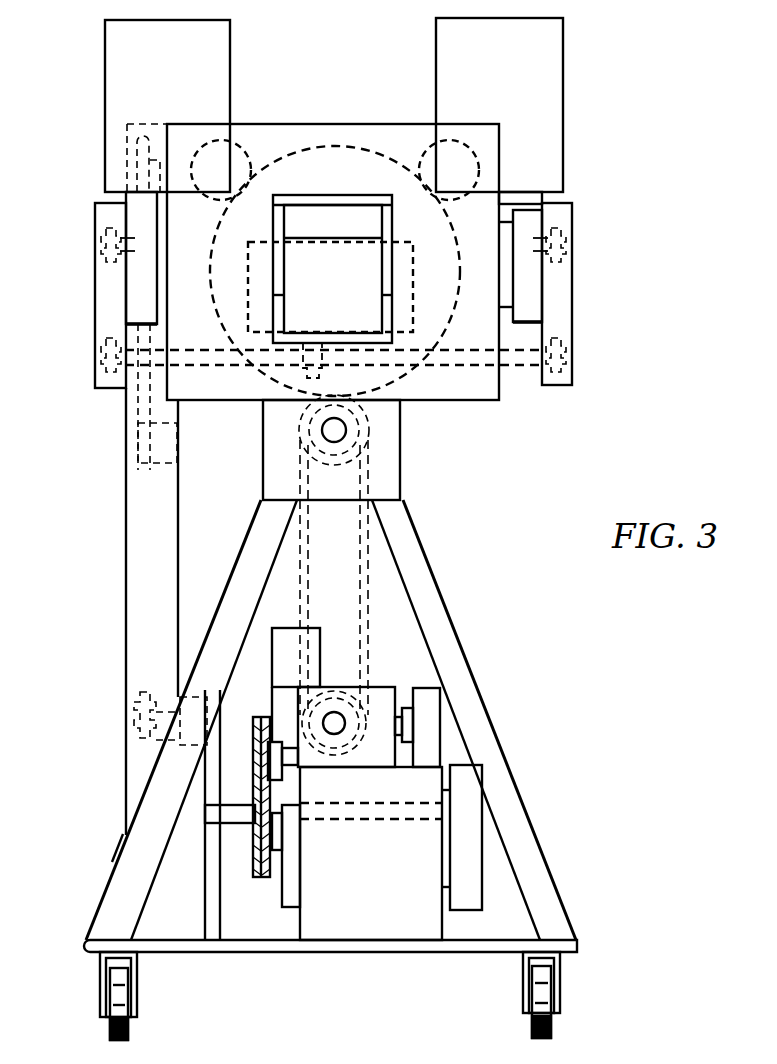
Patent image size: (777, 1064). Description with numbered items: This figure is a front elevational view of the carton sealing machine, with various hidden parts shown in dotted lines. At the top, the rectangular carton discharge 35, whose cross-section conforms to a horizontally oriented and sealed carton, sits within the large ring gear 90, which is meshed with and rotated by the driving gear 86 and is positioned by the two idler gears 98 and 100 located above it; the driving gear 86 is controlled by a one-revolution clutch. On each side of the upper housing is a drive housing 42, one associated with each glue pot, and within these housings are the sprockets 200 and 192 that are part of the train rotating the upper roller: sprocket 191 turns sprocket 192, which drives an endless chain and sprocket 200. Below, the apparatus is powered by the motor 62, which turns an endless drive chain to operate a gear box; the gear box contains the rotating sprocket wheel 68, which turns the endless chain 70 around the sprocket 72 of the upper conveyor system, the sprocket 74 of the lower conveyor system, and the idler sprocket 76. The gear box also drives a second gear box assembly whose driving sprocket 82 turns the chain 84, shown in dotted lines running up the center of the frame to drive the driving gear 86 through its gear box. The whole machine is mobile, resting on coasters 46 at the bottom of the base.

The carton discharge 35 is at (352, 239).
The drive housing 42 is at (95, 292).
The coasters 46 is at (135, 1030).
The motor 62 is at (342, 918).
The sprocket wheel 68 is at (142, 754).
The endless chain 70 is at (127, 613).
The sprocket 72 is at (137, 144).
The sprocket 74 is at (138, 397).
The idler sprocket 76 is at (142, 462).
The driving sprocket 82 is at (352, 694).
The chain 84 is at (368, 590).
The driving gear 86 is at (347, 440).
The ring gear 90 is at (322, 144).
The idler gear 98 is at (234, 144).
The idler gear 100 is at (419, 146).
The sprocket 191 is at (322, 372).
The sprocket 192 is at (97, 378).
The sprocket 200 is at (95, 245).